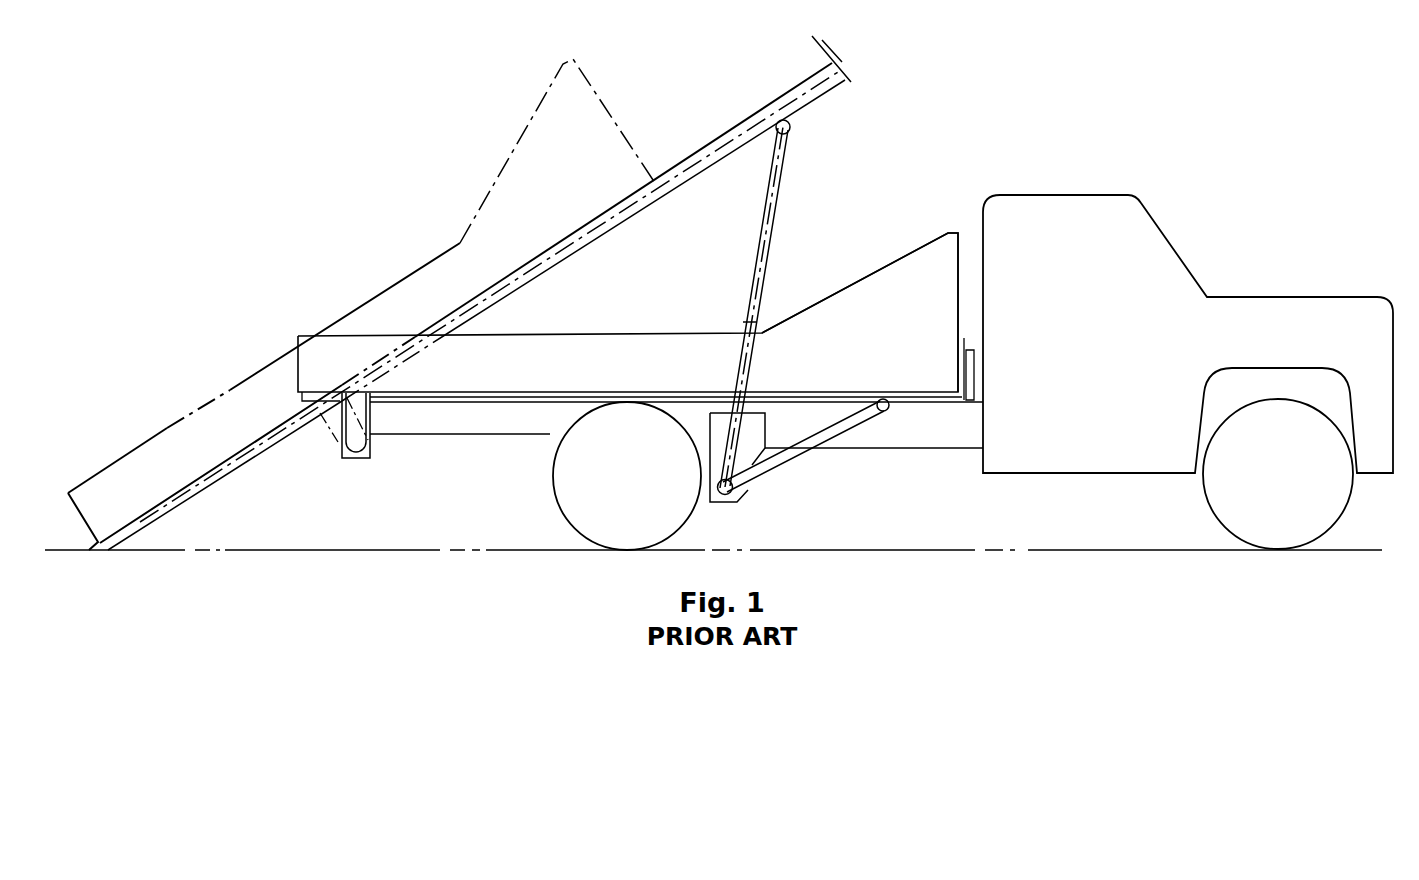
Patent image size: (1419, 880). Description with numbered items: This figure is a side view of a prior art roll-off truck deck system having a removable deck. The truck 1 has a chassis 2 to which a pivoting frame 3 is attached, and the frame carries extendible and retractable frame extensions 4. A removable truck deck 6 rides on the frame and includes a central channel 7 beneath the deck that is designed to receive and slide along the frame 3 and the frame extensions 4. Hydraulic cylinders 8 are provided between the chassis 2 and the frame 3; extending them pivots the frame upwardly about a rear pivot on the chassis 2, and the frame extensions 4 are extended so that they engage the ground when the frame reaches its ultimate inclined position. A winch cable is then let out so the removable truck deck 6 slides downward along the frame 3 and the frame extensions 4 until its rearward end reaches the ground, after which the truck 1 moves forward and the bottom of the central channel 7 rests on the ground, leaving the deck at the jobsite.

The truck 1 is at (1192, 163).
The chassis 2 is at (880, 437).
The pivoting frame 3 is at (445, 397).
The frame extensions 4 is at (232, 466).
The removable truck deck 6 is at (543, 142).
The central channel 7 is at (650, 148).
The hydraulic cylinders 8 is at (743, 365).